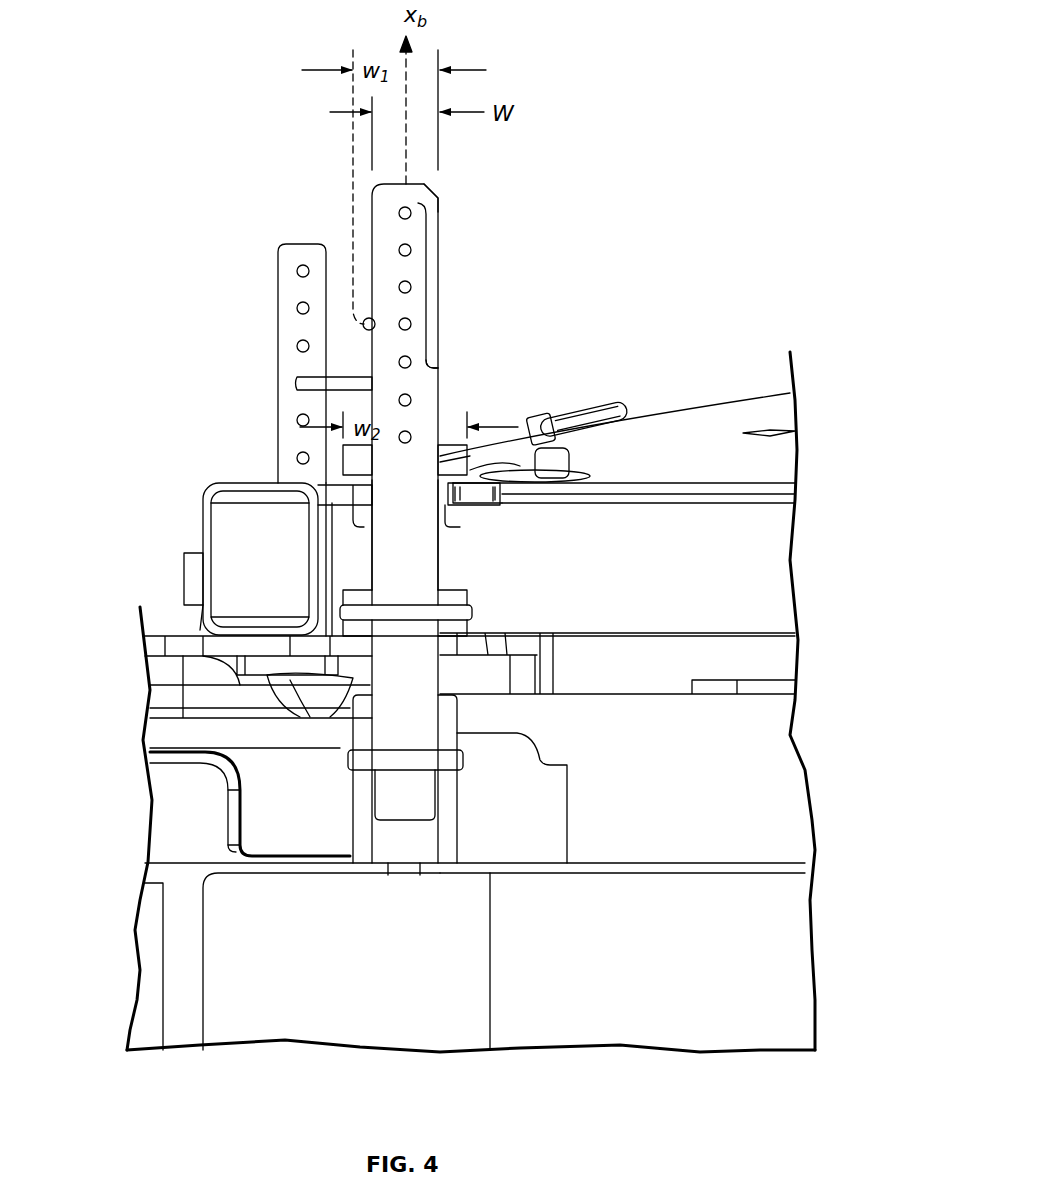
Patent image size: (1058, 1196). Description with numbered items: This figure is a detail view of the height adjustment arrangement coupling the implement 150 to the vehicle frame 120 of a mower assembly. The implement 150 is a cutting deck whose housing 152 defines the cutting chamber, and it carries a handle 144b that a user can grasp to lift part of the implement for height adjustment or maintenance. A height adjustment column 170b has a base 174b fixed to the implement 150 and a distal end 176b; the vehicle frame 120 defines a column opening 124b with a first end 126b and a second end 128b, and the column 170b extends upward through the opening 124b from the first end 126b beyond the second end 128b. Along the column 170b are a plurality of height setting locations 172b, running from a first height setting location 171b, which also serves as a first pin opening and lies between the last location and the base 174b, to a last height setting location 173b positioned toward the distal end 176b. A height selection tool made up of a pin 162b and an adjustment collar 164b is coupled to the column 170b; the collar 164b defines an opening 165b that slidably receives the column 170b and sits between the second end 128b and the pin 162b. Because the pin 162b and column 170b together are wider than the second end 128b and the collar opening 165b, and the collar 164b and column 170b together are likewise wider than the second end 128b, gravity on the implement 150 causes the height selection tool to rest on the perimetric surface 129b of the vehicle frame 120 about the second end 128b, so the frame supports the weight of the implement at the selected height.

The vehicle frame 120 is at (630, 480).
The column opening 124b is at (410, 541).
The first end 126b is at (453, 537).
The second end 128b is at (441, 432).
The perimetric surface 129b is at (349, 466).
The handle 144b is at (165, 765).
The implement 150 is at (160, 944).
The housing 152 is at (208, 863).
The pin 162b is at (352, 256).
The adjustment collar 164b is at (560, 472).
The opening 165b is at (435, 460).
The height adjustment column 170b is at (432, 352).
The first height setting location 171b is at (403, 432).
The height setting locations 172b is at (440, 370).
The last height setting location 173b is at (398, 213).
The base 174b is at (462, 849).
The distal end 176b is at (454, 190).